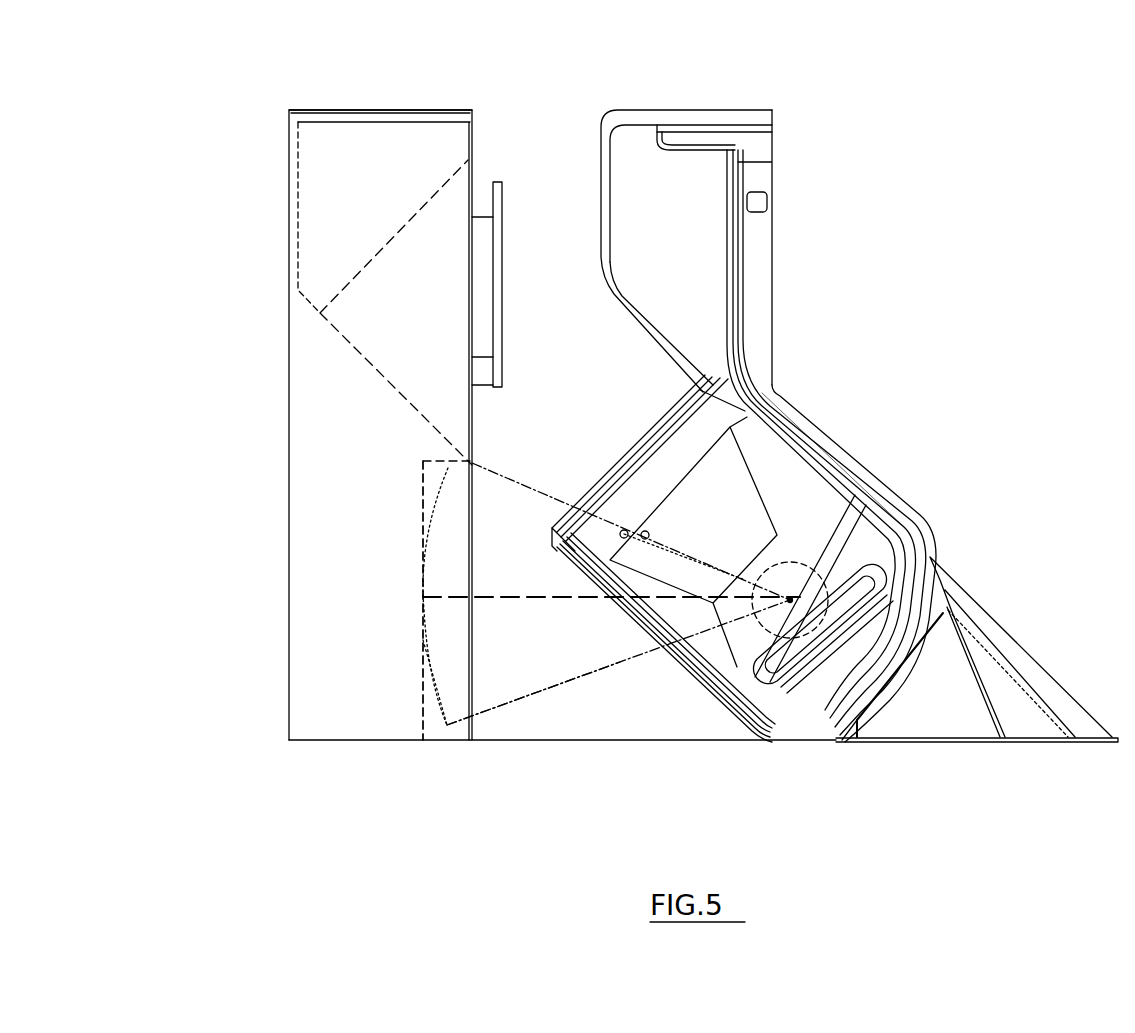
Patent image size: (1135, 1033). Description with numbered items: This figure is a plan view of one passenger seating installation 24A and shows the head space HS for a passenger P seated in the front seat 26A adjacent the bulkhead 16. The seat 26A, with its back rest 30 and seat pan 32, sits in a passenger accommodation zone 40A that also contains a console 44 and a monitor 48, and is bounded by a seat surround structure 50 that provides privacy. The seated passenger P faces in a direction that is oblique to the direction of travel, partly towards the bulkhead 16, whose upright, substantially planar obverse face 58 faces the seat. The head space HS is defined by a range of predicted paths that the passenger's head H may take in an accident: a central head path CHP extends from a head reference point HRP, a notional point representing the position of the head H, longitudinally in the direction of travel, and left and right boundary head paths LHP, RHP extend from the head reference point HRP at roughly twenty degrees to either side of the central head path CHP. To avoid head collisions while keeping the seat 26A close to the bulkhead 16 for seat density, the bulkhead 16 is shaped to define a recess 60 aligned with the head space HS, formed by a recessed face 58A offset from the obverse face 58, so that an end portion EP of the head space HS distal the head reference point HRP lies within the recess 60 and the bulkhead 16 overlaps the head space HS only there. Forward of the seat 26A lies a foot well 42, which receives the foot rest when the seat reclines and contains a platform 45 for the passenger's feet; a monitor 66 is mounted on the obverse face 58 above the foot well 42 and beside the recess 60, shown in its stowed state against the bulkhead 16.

The bulkhead 16 is at (291, 344).
The platform 45 is at (297, 216).
The obverse face 58 is at (484, 130).
The foot well 42 is at (455, 205).
The monitor 66 is at (500, 262).
The end portion of the head space EP is at (428, 628).
The recessed face 58A is at (424, 685).
The recess 60 is at (432, 727).
The central head path CHP is at (525, 600).
The right boundary head path RHP is at (530, 497).
The left boundary head path LHP is at (606, 670).
The head space HS is at (532, 696).
The passenger accommodation zone 40A is at (671, 108).
The console 44 is at (688, 222).
The seat surround structure 50 is at (772, 224).
The monitor 48 is at (797, 450).
The seat pan 32 is at (725, 455).
The passenger seating installation 24A is at (888, 128).
The front seat 26A is at (712, 672).
The passenger's head H is at (772, 578).
The head reference point HRP is at (790, 597).
The back rest 30 is at (877, 570).
The passenger P is at (776, 640).